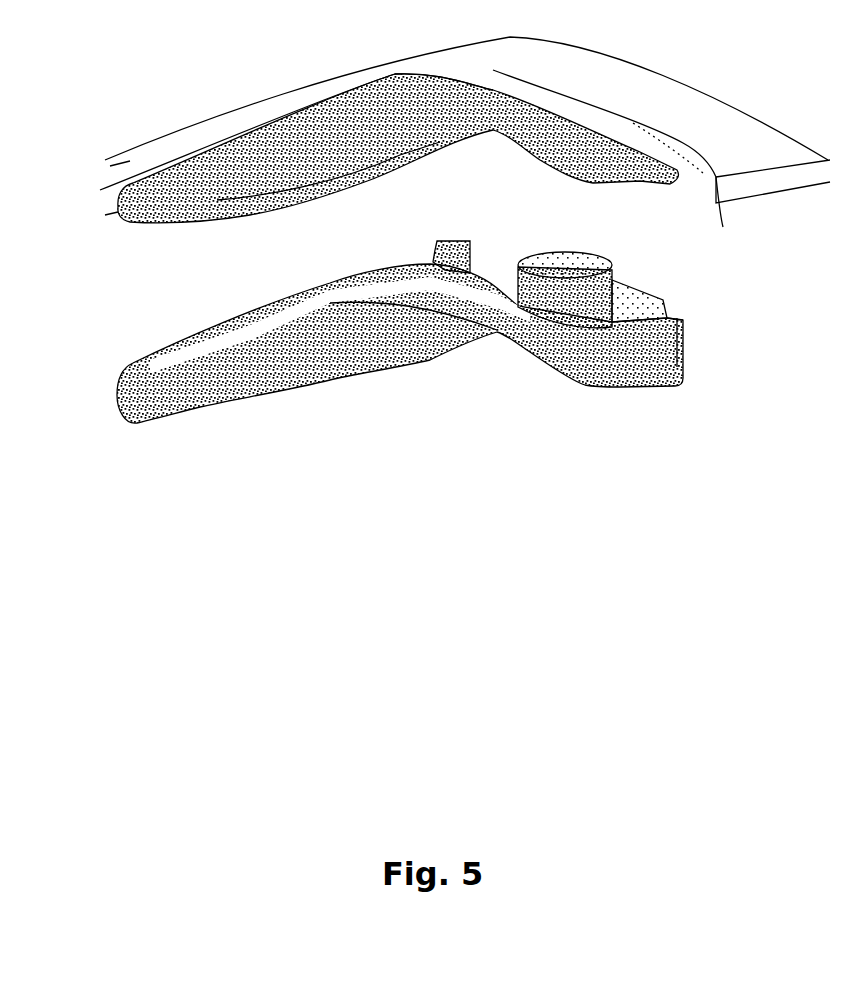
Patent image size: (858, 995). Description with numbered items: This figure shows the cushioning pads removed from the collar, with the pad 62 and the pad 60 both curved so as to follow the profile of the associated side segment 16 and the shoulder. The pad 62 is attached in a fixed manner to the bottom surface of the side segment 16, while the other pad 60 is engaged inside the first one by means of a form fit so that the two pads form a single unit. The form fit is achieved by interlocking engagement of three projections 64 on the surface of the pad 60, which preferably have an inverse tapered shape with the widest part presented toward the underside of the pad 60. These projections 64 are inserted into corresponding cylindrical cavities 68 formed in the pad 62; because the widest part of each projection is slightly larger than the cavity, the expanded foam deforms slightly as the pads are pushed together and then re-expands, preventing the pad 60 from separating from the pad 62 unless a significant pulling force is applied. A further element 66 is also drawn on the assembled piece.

The side segment 16 is at (615, 83).
The pad 60 is at (162, 367).
The pad 62 is at (128, 225).
The projections 64 is at (572, 263).
The mounting block 66 is at (665, 312).
The cylindrical cavities 68 is at (397, 157).